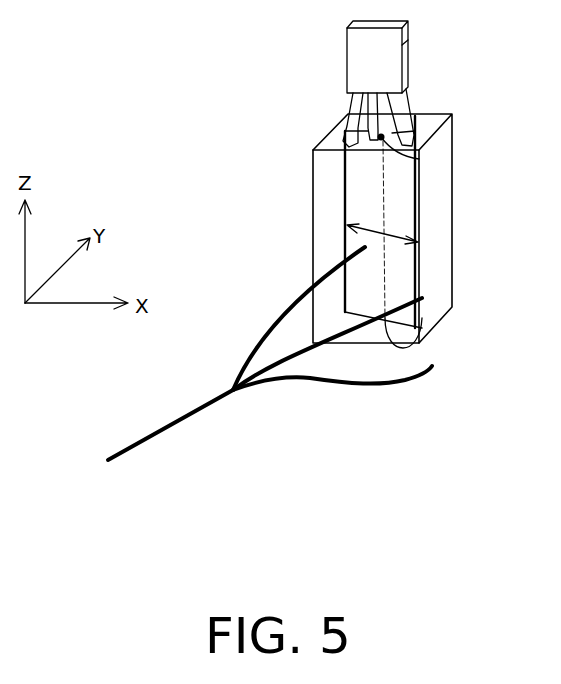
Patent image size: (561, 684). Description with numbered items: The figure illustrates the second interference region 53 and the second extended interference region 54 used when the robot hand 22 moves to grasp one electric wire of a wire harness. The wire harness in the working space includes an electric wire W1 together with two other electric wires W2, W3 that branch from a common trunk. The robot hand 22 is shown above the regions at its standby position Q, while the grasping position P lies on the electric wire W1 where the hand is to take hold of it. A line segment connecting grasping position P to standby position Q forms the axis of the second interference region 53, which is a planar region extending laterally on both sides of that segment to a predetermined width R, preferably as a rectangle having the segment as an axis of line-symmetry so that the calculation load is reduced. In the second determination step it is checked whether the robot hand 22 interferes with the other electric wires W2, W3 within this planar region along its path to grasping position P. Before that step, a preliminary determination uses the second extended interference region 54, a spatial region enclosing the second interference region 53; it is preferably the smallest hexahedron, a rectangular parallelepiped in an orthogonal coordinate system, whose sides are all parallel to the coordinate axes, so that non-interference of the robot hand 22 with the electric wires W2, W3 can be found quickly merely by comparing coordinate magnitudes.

The robot hand 22 is at (392, 57).
The second interference region 53 is at (397, 196).
The second extended interference region 54 is at (440, 247).
The standby position Q is at (419, 159).
The grasping position P is at (403, 348).
The predetermined width R is at (382, 222).
The electric wire W1 is at (285, 366).
The electric wire W2 is at (283, 312).
The electric wire W3 is at (300, 381).